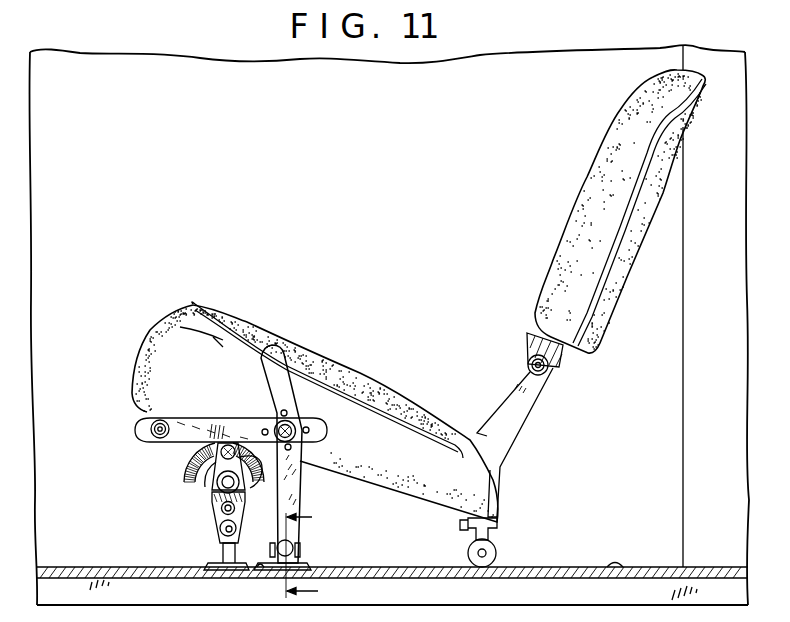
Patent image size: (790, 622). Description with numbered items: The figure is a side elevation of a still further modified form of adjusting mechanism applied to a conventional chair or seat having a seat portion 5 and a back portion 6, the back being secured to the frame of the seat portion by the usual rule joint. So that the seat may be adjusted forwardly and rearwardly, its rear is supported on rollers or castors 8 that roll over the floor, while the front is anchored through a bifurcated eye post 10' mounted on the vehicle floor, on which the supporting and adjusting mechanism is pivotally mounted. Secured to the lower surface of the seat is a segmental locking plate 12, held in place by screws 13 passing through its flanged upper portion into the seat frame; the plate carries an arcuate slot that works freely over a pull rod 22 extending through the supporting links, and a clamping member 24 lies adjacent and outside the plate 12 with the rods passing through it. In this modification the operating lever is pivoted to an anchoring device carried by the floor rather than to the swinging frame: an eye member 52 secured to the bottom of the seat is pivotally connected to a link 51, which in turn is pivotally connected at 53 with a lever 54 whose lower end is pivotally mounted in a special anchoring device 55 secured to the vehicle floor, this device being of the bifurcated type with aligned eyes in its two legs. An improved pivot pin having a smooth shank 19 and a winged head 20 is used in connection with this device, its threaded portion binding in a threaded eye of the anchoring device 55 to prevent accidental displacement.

The seat portion 5 is at (330, 372).
The back portion 6 is at (582, 202).
The rollers or castors 8 is at (490, 538).
The eye post 10' is at (212, 531).
The segmental locking plate 12 is at (186, 458).
The screws 13 is at (320, 555).
The pivot 19 is at (230, 530).
The pivot pin 20 is at (296, 545).
The pull rod 22 is at (222, 485).
The clamping member 24 is at (220, 470).
The link 51 is at (217, 420).
The eye member 52 is at (145, 416).
The pivot 53 is at (294, 420).
The lever 54 is at (297, 492).
The anchoring device 55 is at (294, 558).